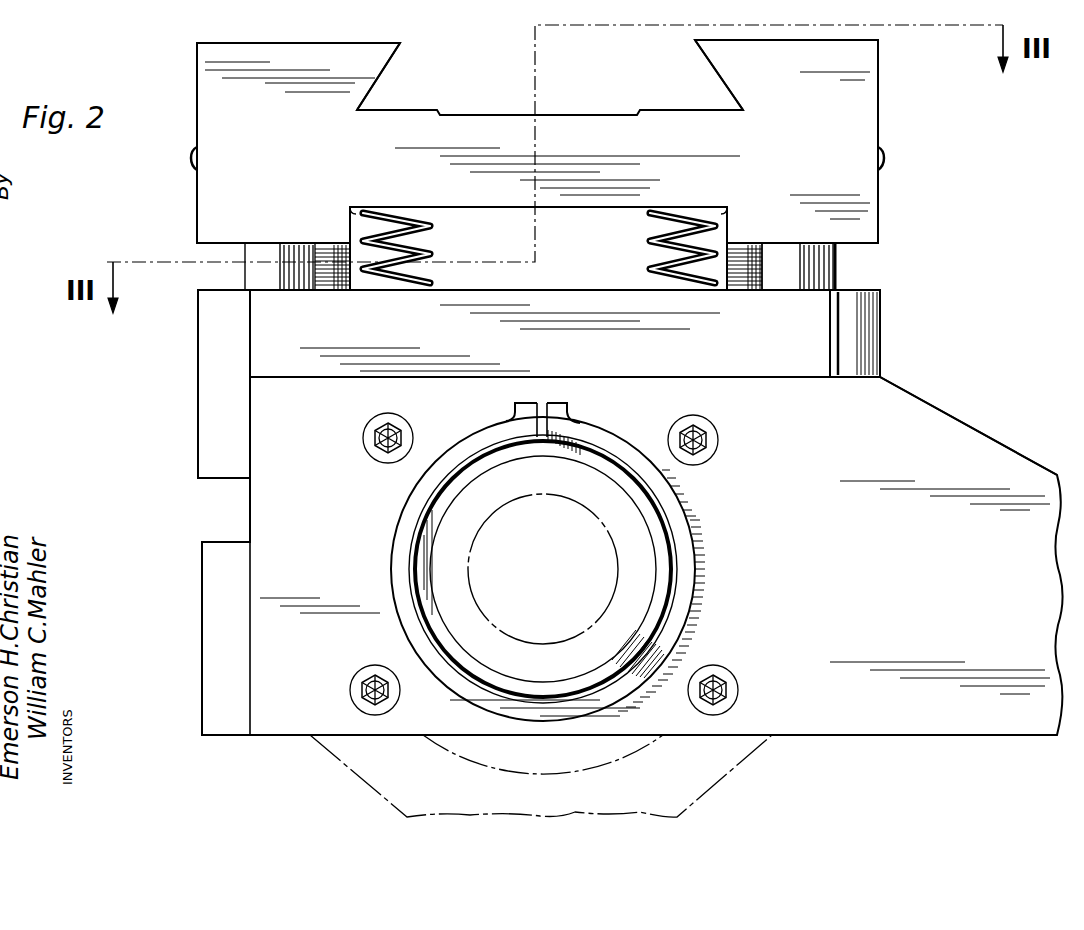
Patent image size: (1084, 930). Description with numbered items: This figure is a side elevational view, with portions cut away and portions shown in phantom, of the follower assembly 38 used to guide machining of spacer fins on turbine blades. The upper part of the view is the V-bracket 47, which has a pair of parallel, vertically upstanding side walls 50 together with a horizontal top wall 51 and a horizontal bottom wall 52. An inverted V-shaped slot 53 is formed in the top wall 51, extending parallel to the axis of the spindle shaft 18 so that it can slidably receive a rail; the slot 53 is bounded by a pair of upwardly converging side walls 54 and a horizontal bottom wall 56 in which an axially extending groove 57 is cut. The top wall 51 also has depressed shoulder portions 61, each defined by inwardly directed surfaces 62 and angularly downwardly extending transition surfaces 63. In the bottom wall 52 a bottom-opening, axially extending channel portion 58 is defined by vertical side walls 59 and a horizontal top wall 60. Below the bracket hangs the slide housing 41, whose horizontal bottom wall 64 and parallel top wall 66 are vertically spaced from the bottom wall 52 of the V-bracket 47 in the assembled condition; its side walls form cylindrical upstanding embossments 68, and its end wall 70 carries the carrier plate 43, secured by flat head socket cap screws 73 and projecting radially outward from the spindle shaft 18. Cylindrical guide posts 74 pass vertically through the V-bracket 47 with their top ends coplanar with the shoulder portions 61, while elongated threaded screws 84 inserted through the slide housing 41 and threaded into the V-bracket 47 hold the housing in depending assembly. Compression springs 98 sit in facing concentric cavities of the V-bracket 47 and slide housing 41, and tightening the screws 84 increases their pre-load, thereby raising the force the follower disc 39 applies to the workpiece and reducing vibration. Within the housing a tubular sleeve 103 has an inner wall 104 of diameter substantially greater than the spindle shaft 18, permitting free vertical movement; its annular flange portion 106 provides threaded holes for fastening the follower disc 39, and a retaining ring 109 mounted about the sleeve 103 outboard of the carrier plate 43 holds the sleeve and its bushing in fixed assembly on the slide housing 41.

The spindle shaft 18 is at (610, 536).
The follower assembly 38 is at (935, 286).
The follower disc 39 is at (735, 778).
The slide housing 41 is at (882, 322).
The carrier plate 43 is at (922, 400).
The V-bracket 47 is at (880, 102).
The side walls 50 is at (197, 194).
The top wall 51 is at (392, 46).
The bottom wall 52 is at (212, 252).
The slot 53 is at (712, 64).
The side walls 54 is at (392, 72).
The bottom wall 56 is at (393, 110).
The groove 57 is at (506, 114).
The channel portion 58 is at (598, 208).
The side walls 59 is at (354, 215).
The top wall 60 is at (526, 208).
The shoulder portions 61 is at (220, 44).
The inwardly directed surfaces 62 is at (206, 48).
The transition surfaces 63 is at (272, 43).
The bottom wall 64 is at (294, 737).
The top wall 66 is at (262, 290).
The embossments 68 is at (198, 358).
The end wall 70 is at (772, 349).
The flat head socket cap screws 73 is at (403, 426).
The guide posts 74 is at (243, 266).
The screws 84 is at (326, 248).
The compression springs 98 is at (432, 250).
The sleeve 103 is at (552, 456).
The inner wall 104 is at (566, 680).
The flange portion 106 is at (498, 782).
The retaining ring 109 is at (604, 430).